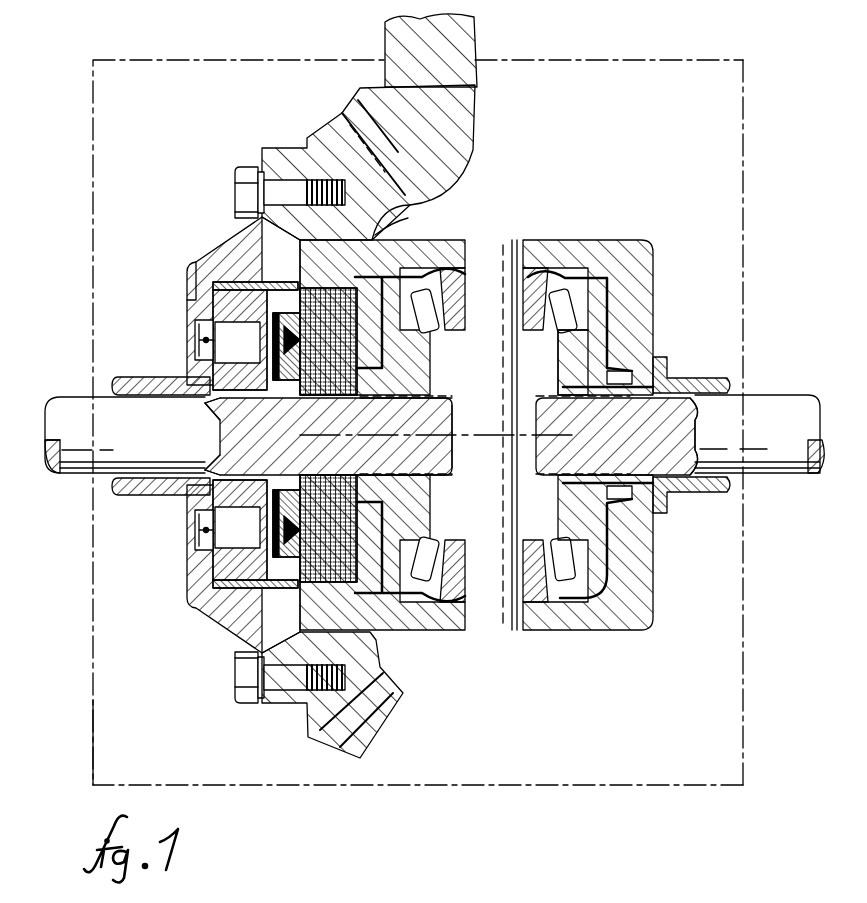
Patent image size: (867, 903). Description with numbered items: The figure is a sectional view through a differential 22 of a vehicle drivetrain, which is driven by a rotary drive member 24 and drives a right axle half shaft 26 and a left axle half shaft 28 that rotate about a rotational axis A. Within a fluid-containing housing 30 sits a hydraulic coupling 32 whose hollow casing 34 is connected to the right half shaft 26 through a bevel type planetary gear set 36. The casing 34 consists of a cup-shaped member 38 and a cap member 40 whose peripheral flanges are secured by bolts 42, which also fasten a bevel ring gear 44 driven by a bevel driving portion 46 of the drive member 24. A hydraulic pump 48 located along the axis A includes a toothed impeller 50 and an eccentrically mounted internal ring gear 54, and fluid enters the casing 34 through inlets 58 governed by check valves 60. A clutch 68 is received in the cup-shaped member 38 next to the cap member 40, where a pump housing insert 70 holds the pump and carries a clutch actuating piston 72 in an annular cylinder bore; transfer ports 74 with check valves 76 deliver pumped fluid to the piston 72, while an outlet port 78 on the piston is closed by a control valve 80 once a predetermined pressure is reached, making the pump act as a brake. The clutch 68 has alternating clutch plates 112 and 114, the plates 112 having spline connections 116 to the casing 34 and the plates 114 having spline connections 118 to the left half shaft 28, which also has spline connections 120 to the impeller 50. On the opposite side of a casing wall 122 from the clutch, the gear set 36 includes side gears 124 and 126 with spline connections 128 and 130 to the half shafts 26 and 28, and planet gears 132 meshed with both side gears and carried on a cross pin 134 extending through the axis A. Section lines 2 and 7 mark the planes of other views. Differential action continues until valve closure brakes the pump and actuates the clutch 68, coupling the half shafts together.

The differential 22 is at (658, 58).
The rotary drive member 24 is at (383, 60).
The right axle half shaft 26 is at (757, 406).
The left axle half shaft 28 is at (74, 458).
The housing 30 is at (743, 150).
The hydraulic coupling 32 is at (130, 683).
The casing 34 is at (574, 240).
The planetary gear set 36 is at (622, 310).
The cup-shaped member 38 is at (456, 244).
The cap member 40 is at (205, 255).
The bolts 42 is at (260, 165).
The ring gear 44 is at (332, 128).
The bevel driving portion 46 is at (383, 182).
The hydraulic pump 48 is at (216, 288).
The impeller 50 is at (160, 392).
The internal ring gear 54 is at (196, 276).
The inlet 58 is at (216, 322).
The check valve 60 is at (199, 346).
The clutch 68 is at (372, 635).
The pump housing insert 70 is at (258, 250).
The clutch actuating piston 72 is at (190, 586).
The transfer ports 74 is at (272, 338).
The check valve 76 is at (205, 338).
The outlet port 78 is at (406, 416).
The control valve 80 is at (300, 422).
The clutch plates 112 is at (380, 344).
The clutch plates 114 is at (293, 480).
The spline connections 116 is at (375, 235).
The spline connections 118 is at (355, 460).
The spline connections 120 is at (207, 392).
The casing wall 122 is at (430, 504).
The side gear 124 is at (612, 331).
The side gear 126 is at (398, 275).
The spline connections 128 is at (618, 418).
The spline connections 130 is at (428, 436).
The planet gears 132 is at (538, 268).
The cross pin 134 is at (503, 368).
The section line 2 is at (247, 263).
The section line 7 is at (342, 292).
The rotational axis A is at (530, 422).